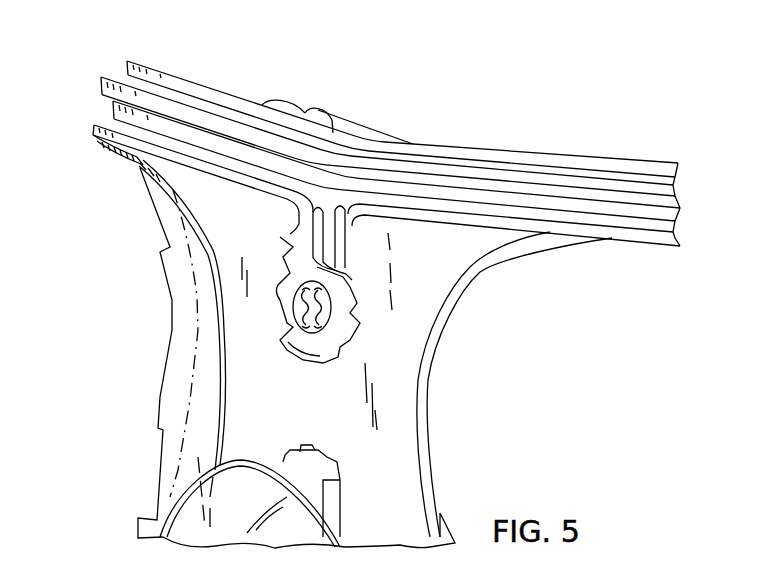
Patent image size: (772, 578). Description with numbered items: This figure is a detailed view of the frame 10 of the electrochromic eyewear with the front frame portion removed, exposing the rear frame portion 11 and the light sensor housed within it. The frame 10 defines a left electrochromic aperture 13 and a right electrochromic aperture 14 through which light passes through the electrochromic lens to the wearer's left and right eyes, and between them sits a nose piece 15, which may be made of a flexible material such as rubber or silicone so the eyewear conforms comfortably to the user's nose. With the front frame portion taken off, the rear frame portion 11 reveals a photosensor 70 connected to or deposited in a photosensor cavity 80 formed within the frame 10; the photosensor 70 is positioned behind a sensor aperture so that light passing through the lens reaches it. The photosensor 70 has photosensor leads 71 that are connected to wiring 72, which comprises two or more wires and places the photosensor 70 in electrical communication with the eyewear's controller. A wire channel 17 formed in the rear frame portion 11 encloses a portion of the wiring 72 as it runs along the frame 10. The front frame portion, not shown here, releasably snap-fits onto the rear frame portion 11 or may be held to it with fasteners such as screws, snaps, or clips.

The frame 10 is at (170, 75).
The rear frame portion 11 is at (515, 147).
The wiring 72 is at (110, 104).
The wire channel 17 is at (113, 129).
The right electrochromic aperture 14 is at (150, 196).
The photosensor leads 71 is at (313, 236).
The photosensor 70 is at (347, 318).
The photosensor cavity 80 is at (297, 350).
The left electrochromic aperture 13 is at (430, 412).
The nose piece 15 is at (170, 512).